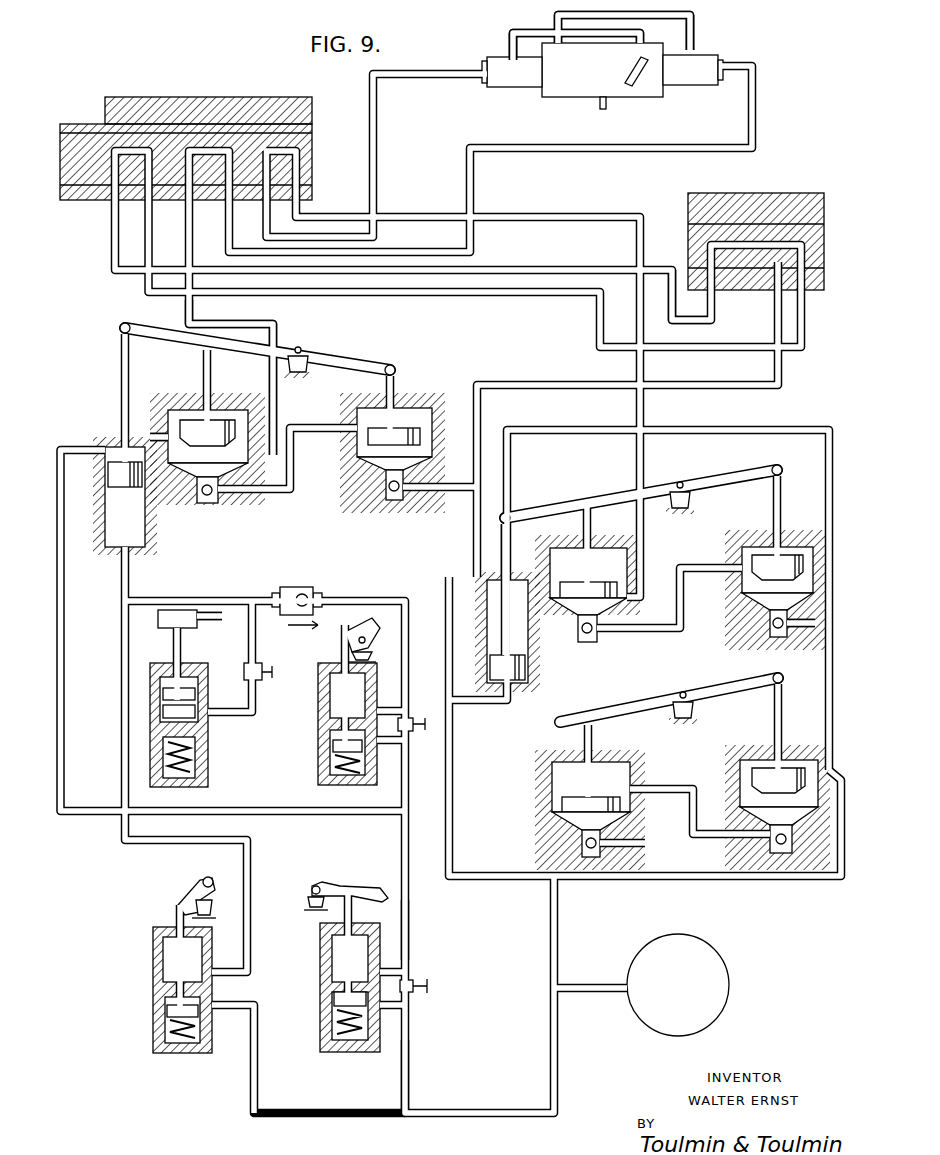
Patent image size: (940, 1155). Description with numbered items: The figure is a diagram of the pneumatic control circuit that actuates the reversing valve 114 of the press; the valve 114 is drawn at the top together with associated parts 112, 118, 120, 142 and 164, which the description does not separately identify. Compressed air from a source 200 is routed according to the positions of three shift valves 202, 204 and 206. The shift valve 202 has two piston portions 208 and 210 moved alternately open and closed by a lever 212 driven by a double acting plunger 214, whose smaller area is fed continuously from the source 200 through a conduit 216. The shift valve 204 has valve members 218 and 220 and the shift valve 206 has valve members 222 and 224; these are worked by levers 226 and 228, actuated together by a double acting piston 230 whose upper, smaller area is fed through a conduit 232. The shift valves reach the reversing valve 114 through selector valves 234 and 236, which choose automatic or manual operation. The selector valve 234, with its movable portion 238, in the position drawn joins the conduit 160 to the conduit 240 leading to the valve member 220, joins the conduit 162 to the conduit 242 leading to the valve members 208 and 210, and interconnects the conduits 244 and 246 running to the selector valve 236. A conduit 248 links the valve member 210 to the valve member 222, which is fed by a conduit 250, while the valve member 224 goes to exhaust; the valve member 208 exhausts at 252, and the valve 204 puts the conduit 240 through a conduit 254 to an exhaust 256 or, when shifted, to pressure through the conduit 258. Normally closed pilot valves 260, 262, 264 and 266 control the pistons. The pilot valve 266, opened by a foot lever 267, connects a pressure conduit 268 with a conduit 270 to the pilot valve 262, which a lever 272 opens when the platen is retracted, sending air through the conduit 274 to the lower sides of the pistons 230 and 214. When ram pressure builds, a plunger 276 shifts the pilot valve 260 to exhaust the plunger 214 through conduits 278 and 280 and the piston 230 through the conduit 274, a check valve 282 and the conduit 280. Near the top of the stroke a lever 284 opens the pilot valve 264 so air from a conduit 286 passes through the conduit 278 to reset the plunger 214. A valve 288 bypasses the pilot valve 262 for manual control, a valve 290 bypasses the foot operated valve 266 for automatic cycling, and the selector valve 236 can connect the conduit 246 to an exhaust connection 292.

The cylinder port 112 is at (606, 106).
The reversing valve 114 is at (565, 90).
The pipe 118 is at (641, 35).
The pipe 120 is at (558, 20).
The piston 142 is at (620, 70).
The conduit 160 is at (476, 78).
The conduit 162 is at (735, 72).
The branch pipes 164 is at (513, 44).
The source of compressed air 200 is at (694, 994).
The shift valve 202 is at (308, 409).
The shift valve 204 is at (715, 546).
The shift valve 206 is at (713, 756).
The piston portion 208 is at (230, 425).
The piston portion 210 is at (423, 440).
The lever 212 is at (172, 340).
The double acting plunger 214 is at (108, 480).
The conduit 216 is at (64, 660).
The valve member 218 is at (790, 555).
The valve member 220 is at (605, 580).
The valve member 222 is at (810, 760).
The valve member 224 is at (632, 790).
The lever 226 is at (607, 513).
The lever 228 is at (632, 705).
The double acting piston 230 is at (528, 675).
The conduit 232 is at (448, 645).
The selector valve 234 is at (307, 100).
The selector valve 236 is at (782, 184).
The movable portion 238 is at (312, 137).
The conduit 240 is at (333, 217).
The conduit 242 is at (198, 318).
The conduit 244 is at (178, 262).
The conduit 246 is at (110, 266).
The conduit 248 is at (595, 430).
The conduit 250 is at (762, 878).
The exhaust 252 is at (162, 436).
The conduit 254 is at (683, 612).
The exhaust 256 is at (792, 632).
The conduit 258 is at (528, 570).
The pilot valve 260 is at (212, 775).
The pilot valve 262 is at (318, 770).
The pilot valve 264 is at (153, 947).
The pilot valve 266 is at (320, 950).
The foot lever 267 is at (360, 875).
The pressure conduit 268 is at (408, 1082).
The conduit 270 is at (408, 938).
The lever 272 is at (340, 632).
The conduit 274 is at (410, 612).
The plunger 276 is at (172, 640).
The conduit 278 is at (132, 595).
The conduit 280 is at (248, 662).
The check valve 282 is at (318, 580).
The lever 284 is at (200, 880).
The conduit 286 is at (256, 1048).
The bypass valve 288 is at (417, 735).
The bypass valve 290 is at (418, 982).
The exhaust connection 292 is at (735, 305).